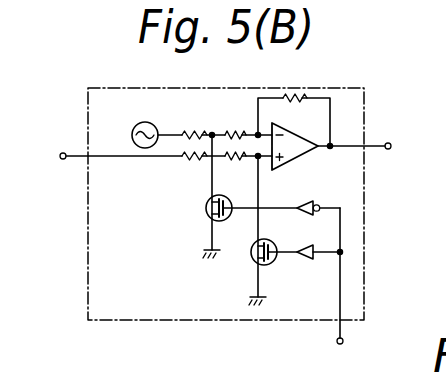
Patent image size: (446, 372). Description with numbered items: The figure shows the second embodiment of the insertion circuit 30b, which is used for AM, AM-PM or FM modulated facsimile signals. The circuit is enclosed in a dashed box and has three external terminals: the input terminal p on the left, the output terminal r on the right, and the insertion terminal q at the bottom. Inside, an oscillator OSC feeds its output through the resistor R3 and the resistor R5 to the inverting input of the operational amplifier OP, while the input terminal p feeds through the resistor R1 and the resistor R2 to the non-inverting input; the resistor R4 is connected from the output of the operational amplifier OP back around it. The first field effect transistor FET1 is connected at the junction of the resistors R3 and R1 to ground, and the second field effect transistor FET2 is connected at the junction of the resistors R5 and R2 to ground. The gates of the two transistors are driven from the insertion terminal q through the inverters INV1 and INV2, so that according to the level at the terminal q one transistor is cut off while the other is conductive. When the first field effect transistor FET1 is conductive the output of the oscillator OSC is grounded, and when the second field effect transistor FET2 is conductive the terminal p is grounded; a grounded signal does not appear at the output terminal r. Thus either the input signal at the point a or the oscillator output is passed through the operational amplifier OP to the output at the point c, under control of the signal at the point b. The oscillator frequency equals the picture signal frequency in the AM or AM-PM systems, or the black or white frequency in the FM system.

The insertion circuit 30b is at (366, 102).
The oscillator OSC is at (146, 124).
The resistor R1 is at (201, 170).
The resistor R2 is at (247, 170).
The resistor R3 is at (201, 123).
The resistor R4 is at (294, 120).
The resistor R5 is at (247, 123).
The operational amplifier OP is at (303, 153).
The first field effect transistor FET1 is at (224, 196).
The second field effect transistor FET2 is at (250, 230).
The inverter INV1 is at (314, 197).
The inverter INV2 is at (314, 268).
The input signal line a is at (110, 159).
The control signal line b is at (337, 307).
The output signal line c is at (353, 146).
The input terminal p is at (110, 151).
The insertion terminal q is at (348, 284).
The output terminal r is at (394, 146).